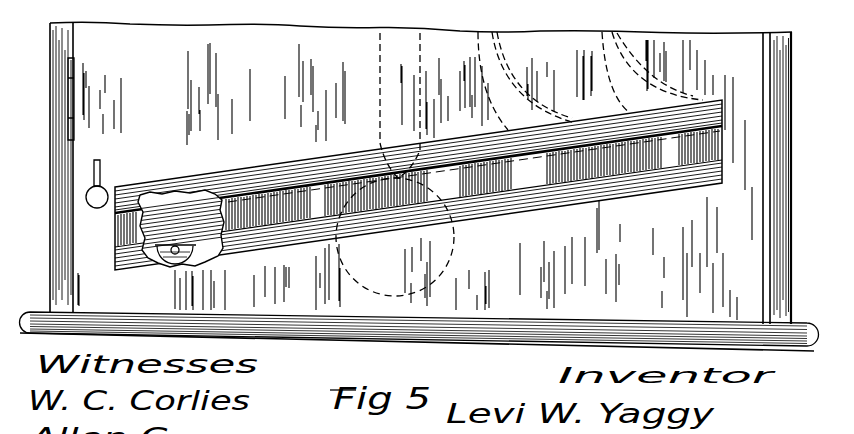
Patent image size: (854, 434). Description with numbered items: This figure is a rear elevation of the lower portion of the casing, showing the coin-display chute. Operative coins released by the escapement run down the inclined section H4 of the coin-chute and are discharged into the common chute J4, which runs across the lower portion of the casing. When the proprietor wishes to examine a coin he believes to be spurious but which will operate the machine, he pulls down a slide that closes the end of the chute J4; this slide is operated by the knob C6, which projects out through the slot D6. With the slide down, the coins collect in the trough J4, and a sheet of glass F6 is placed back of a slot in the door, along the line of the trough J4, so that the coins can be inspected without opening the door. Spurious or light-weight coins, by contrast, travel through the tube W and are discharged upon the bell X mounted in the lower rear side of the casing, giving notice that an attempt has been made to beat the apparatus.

The tube W is at (378, 50).
The inclined section of the coin-chute H4 is at (503, 53).
The bell X is at (395, 237).
The sheet of glass F6 is at (292, 176).
The common chute J4 is at (188, 222).
The knob C6 is at (106, 191).
The slot D6 is at (90, 162).